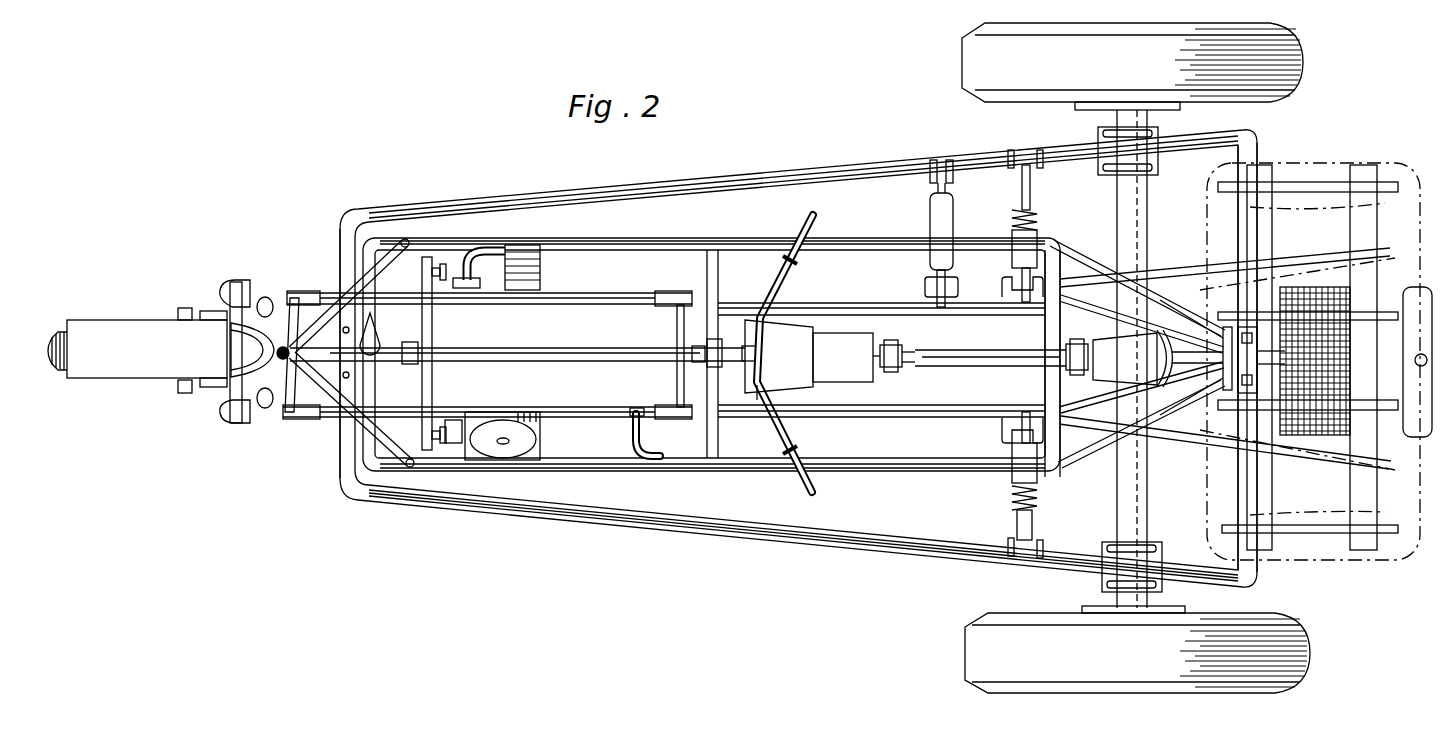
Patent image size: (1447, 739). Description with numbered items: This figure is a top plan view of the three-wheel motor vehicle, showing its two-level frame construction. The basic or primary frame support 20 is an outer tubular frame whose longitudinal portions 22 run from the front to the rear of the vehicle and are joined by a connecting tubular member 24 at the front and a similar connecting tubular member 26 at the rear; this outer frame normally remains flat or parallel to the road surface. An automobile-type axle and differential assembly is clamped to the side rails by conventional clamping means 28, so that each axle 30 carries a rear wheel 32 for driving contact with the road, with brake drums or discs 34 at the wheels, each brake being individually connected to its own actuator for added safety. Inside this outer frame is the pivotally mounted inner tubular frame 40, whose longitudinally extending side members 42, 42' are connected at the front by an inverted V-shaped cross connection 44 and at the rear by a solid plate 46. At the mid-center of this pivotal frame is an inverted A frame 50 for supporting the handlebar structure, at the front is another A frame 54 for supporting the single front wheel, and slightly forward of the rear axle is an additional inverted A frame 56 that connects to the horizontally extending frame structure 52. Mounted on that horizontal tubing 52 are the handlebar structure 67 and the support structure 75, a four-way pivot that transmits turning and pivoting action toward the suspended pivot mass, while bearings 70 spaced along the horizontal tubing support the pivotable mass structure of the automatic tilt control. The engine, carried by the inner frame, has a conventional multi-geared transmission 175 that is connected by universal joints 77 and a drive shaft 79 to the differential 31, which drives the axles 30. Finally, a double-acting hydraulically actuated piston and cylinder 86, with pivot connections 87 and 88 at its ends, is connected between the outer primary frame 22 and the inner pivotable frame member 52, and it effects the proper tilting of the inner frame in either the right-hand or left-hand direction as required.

The primary frame support 20 is at (780, 572).
The longitudinal portions 22 is at (817, 177).
The front connecting tubular member 24 is at (340, 457).
The rear connecting tubular member 26 is at (1262, 567).
The clamping means 28 is at (1100, 575).
The axle 30 is at (1125, 208).
The differential 31 is at (1133, 367).
The wheels 32 is at (1082, 73).
The brake drums or discs 34 is at (1093, 110).
The inner tubular frame 40 is at (954, 492).
The side members 42 is at (712, 489).
The upper inner frame tube 42' is at (712, 220).
The inverted V-shaped cross connection 44 is at (368, 256).
The solid plate 46 is at (1220, 330).
The inverted A frame 50 is at (707, 273).
The horizontal extending frame structure 52 is at (862, 310).
The front A frame 54 is at (333, 400).
The inverted A frame 56 is at (1045, 390).
The handlebar structure 67 is at (772, 295).
The bearings 70 is at (412, 347).
The support structure 75 is at (757, 403).
The universal joints 77 is at (905, 352).
The drive shaft 79 is at (978, 352).
The hydraulic actuated piston and cylinder 86 is at (940, 218).
The pivot connection 87 is at (932, 177).
The pivot connection 88 is at (932, 287).
The multi geared transmission 175 is at (802, 360).